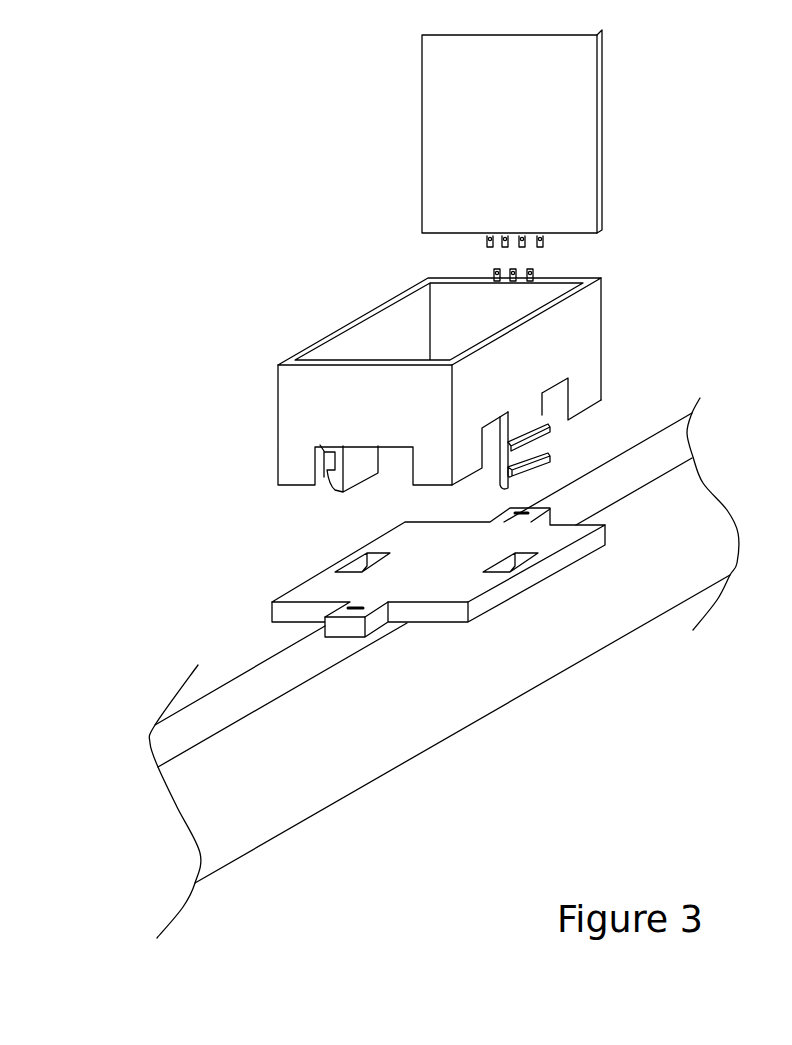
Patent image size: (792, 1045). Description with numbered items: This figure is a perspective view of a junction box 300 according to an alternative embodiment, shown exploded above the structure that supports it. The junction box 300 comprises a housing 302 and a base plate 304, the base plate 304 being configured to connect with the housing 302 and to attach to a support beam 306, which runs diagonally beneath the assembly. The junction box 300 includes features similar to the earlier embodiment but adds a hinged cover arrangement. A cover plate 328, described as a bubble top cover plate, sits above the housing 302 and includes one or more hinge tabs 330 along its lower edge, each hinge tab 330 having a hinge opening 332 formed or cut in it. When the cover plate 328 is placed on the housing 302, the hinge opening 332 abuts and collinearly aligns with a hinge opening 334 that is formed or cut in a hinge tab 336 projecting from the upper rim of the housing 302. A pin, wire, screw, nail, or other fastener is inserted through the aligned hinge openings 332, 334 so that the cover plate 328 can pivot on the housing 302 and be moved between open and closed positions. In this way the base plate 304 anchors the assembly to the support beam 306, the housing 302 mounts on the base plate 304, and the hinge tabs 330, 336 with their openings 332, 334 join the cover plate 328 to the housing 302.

The junction box 300 is at (243, 162).
The housing 302 is at (386, 380).
The base plate 304 is at (238, 570).
The support beam 306 is at (650, 580).
The cover plate 328 is at (491, 163).
The hinge tabs 330 is at (484, 243).
The hinge openings 332 is at (545, 242).
The hinge opening 334 is at (532, 280).
The hinge tab 336 is at (500, 284).